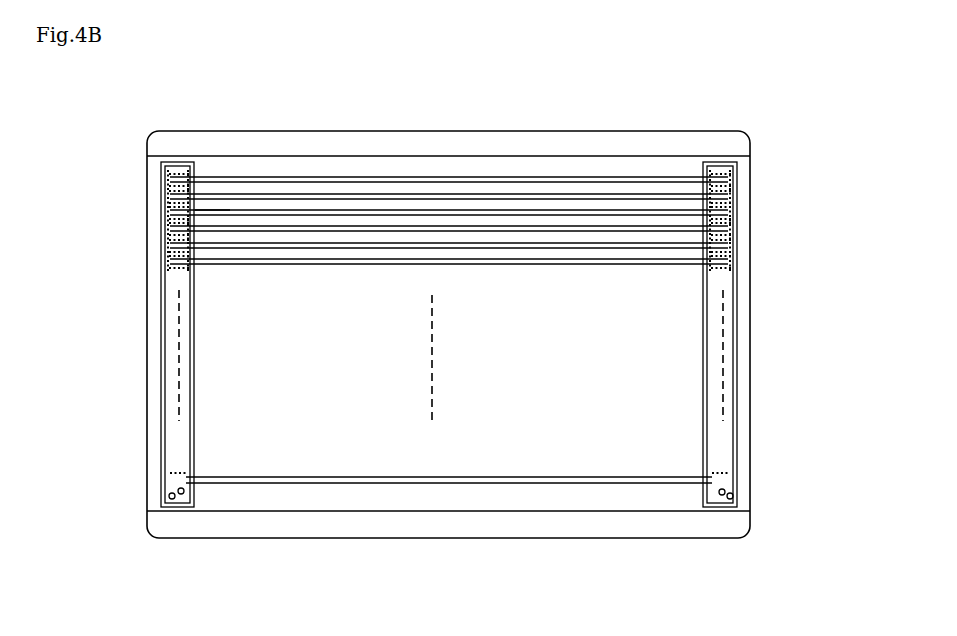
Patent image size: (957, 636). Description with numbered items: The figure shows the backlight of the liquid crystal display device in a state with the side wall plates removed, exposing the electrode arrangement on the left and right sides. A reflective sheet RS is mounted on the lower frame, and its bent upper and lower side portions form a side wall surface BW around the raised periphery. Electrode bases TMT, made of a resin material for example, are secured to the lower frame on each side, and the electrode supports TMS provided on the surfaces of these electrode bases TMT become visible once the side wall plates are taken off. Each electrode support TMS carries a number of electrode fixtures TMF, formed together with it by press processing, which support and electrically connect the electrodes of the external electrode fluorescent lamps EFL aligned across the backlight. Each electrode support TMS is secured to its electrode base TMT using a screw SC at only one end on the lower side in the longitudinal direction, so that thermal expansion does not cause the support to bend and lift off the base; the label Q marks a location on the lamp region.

The bottom wall / housing frame BW is at (580, 142).
The electrode fiber lines EFL is at (275, 177).
The terminal mounting frame TMF is at (170, 209).
The terminal mounting tube TMT is at (163, 433).
The terminal mounting slot TMS is at (172, 298).
The reflective sheet / region RS is at (240, 367).
The screw connection SC is at (178, 491).
The point Q is at (212, 218).